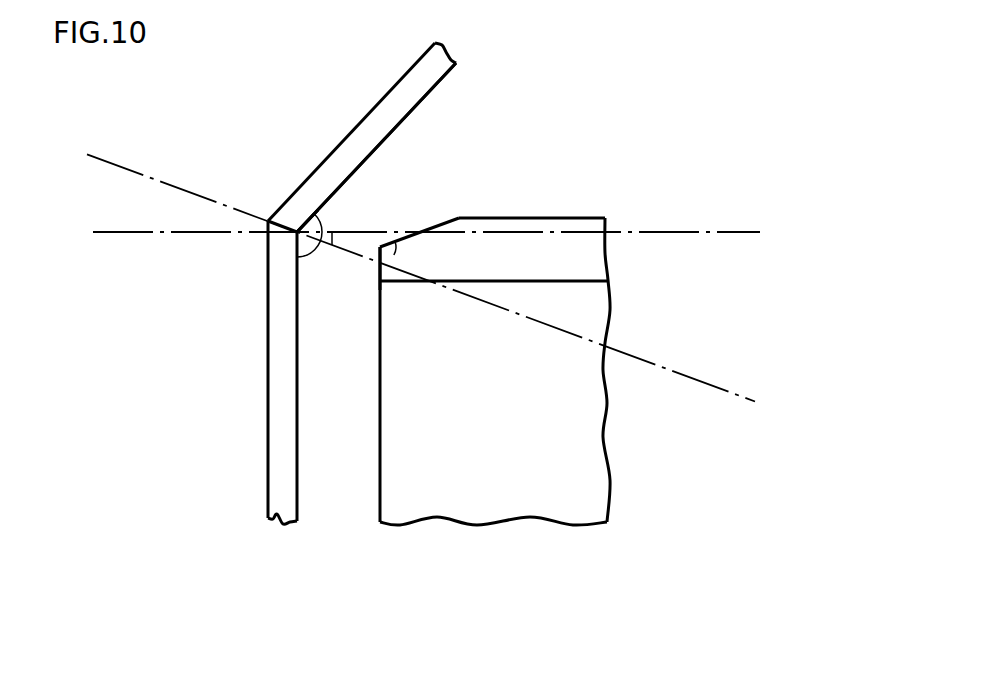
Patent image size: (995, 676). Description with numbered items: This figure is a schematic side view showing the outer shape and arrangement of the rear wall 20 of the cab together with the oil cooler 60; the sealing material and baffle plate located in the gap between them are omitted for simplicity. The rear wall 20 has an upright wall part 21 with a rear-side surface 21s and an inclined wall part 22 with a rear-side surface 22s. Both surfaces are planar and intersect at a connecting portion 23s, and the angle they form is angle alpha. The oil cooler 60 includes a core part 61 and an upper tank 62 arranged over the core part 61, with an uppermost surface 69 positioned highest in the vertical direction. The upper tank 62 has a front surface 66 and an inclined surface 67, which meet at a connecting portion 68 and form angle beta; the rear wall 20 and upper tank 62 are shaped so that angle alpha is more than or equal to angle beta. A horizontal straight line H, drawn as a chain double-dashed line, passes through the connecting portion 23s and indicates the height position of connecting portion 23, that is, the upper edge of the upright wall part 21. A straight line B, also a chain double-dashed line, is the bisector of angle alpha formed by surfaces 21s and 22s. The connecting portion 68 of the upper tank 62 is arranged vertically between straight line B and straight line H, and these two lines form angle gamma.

The rear wall 20 is at (341, 310).
The upright wall part 21 is at (281, 399).
The surface of upright wall part 21s is at (299, 493).
The inclined wall part 22 is at (381, 137).
The surface of inclined wall part 22s is at (433, 90).
The connecting portion 23 is at (285, 227).
The connecting portion 23s is at (308, 226).
The oil cooler 60 is at (501, 364).
The core part 61 is at (488, 477).
The upper tank 62 is at (548, 257).
The front surface 66 is at (379, 271).
The inclined surface 67 is at (442, 225).
The connecting portion 68 is at (380, 252).
The uppermost surface 69 is at (502, 218).
The straight line H is at (672, 231).
The straight line B is at (693, 379).